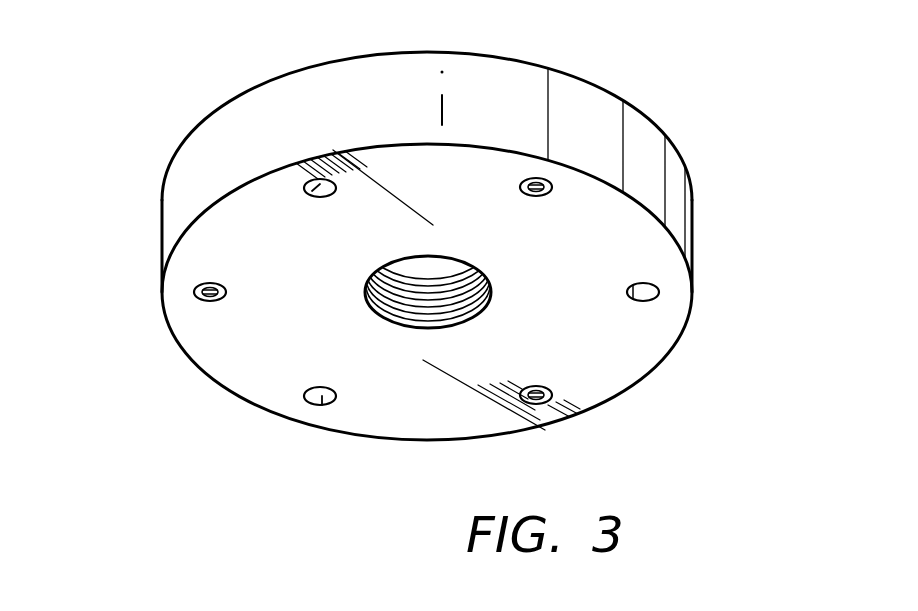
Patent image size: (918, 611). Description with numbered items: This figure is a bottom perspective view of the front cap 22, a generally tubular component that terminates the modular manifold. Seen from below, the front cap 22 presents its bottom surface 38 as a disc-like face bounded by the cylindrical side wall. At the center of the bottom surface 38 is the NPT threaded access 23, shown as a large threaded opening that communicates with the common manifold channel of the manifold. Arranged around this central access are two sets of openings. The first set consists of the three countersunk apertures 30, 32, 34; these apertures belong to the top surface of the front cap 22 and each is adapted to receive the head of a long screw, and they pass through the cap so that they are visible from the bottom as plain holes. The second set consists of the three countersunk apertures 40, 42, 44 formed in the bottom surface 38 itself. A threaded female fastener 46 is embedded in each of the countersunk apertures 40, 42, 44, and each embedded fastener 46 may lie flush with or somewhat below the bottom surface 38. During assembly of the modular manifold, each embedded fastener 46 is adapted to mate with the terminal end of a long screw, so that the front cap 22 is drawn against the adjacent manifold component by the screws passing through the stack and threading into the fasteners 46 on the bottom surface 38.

The front cap 22 is at (733, 135).
The NPT threaded access 23 is at (423, 296).
The countersunk aperture 30 is at (642, 292).
The countersunk aperture 32 is at (312, 191).
The countersunk aperture 34 is at (321, 400).
The bottom surface 38 is at (660, 341).
The countersunk aperture 40 is at (545, 383).
The countersunk aperture 42 is at (532, 186).
The countersunk aperture 44 is at (214, 298).
The threaded female fastener 46 is at (540, 187).